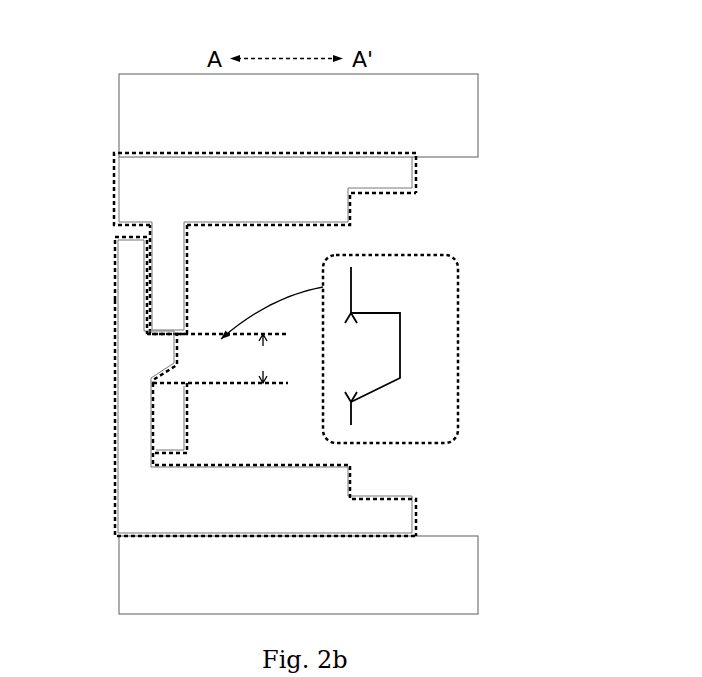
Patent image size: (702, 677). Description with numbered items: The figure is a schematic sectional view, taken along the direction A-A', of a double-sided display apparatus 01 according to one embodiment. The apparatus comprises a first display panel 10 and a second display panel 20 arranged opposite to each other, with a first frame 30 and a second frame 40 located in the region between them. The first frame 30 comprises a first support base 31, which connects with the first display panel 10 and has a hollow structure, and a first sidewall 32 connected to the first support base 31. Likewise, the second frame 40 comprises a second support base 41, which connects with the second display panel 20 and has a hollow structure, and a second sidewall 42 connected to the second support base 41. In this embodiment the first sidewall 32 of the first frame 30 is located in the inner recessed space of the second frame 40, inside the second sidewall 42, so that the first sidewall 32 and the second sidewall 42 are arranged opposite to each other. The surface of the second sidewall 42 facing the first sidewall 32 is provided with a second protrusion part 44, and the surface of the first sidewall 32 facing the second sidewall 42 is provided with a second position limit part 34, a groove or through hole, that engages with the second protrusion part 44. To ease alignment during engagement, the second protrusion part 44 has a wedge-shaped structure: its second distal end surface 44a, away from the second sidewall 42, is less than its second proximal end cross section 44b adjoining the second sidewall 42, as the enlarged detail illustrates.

The first display panel 10 is at (478, 116).
The second display panel 20 is at (478, 573).
The first frame 30 is at (230, 243).
The first support base 31 is at (262, 200).
The first sidewall 32 is at (176, 277).
The second position limit part 34 is at (220, 358).
The second frame 40 is at (230, 386).
The second support base 41 is at (242, 483).
The second sidewall 42 is at (135, 286).
The second protrusion part 44 is at (158, 355).
The second distal end surface 44a is at (400, 355).
The second proximal end cross section 44b is at (352, 346).
The double-sided display apparatus 01 is at (388, 349).